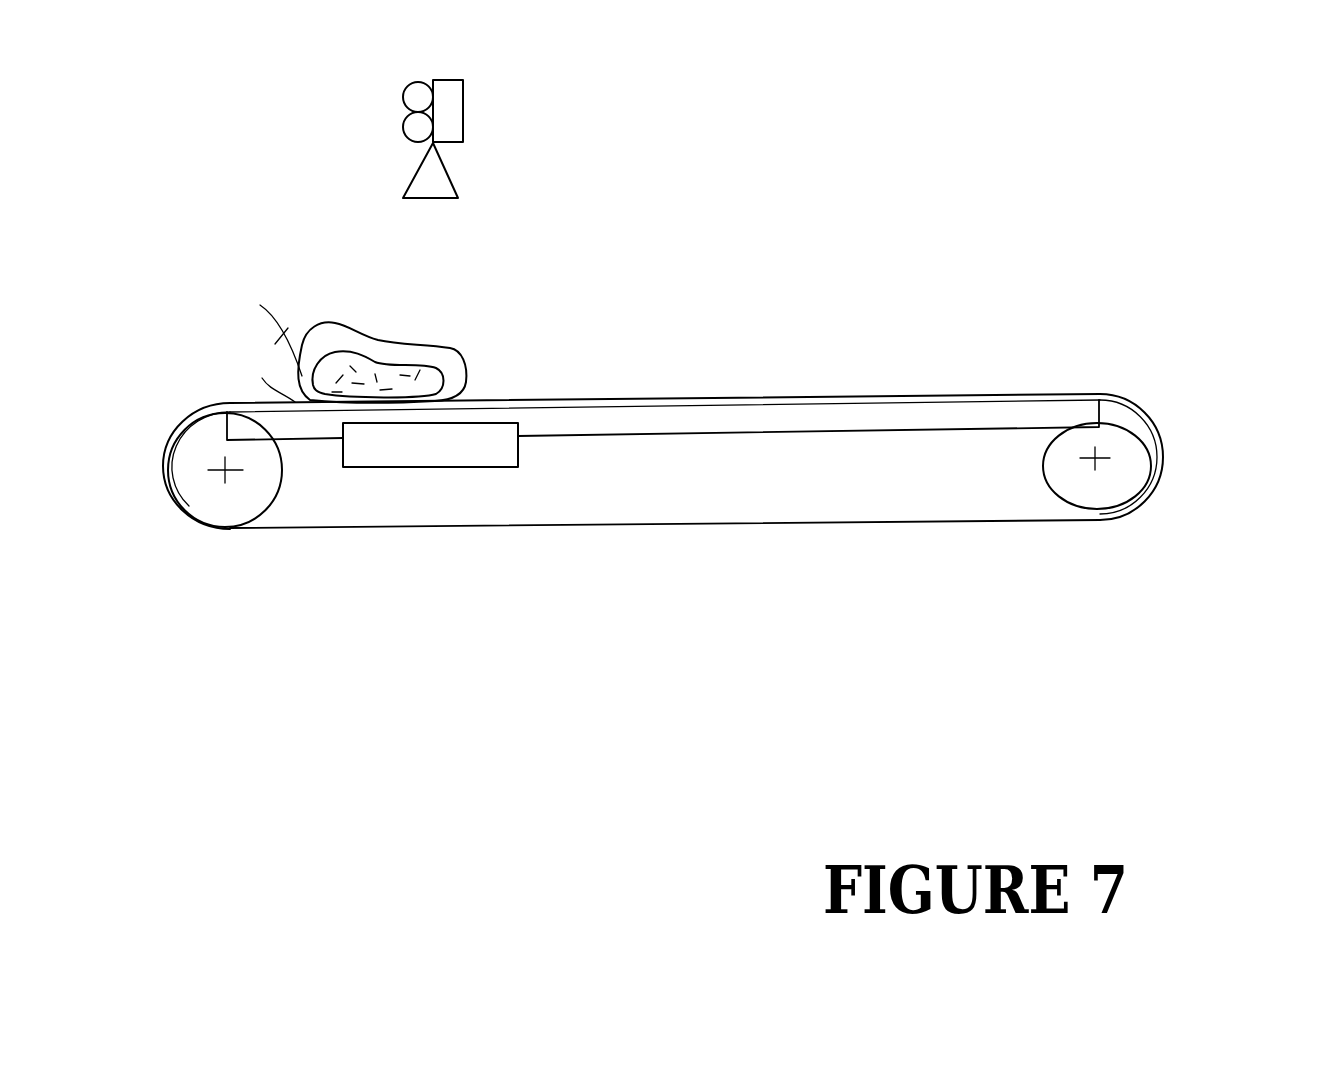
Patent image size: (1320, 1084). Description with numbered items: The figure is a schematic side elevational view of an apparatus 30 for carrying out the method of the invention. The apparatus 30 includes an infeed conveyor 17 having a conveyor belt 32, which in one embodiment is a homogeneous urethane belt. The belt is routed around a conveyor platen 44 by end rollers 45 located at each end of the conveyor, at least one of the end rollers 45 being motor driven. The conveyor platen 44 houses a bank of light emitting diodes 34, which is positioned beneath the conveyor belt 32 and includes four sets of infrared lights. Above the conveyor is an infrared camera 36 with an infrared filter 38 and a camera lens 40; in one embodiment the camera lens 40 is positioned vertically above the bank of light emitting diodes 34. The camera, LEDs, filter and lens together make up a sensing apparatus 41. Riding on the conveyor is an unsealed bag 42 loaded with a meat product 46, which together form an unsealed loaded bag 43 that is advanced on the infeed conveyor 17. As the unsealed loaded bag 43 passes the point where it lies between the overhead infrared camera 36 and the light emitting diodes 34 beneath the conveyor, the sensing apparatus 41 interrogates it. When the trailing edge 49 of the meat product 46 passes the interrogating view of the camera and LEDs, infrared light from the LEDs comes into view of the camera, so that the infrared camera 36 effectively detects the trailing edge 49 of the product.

The infeed conveyor 17 is at (970, 538).
The apparatus 30 is at (1230, 143).
The conveyor belt 32 is at (742, 396).
The bank of light emitting diodes 34 is at (430, 445).
The infrared camera 36 is at (465, 115).
The infrared filter 38 is at (399, 121).
The camera lens 40 is at (460, 175).
The sensing apparatus 41 is at (574, 119).
The unsealed bag 42 is at (458, 353).
The unsealed loaded bag 43 is at (478, 292).
The conveyor platen 44 is at (870, 432).
The end rollers 45 is at (192, 474).
The meat product 46 is at (373, 366).
The trailing edge 49 is at (257, 333).